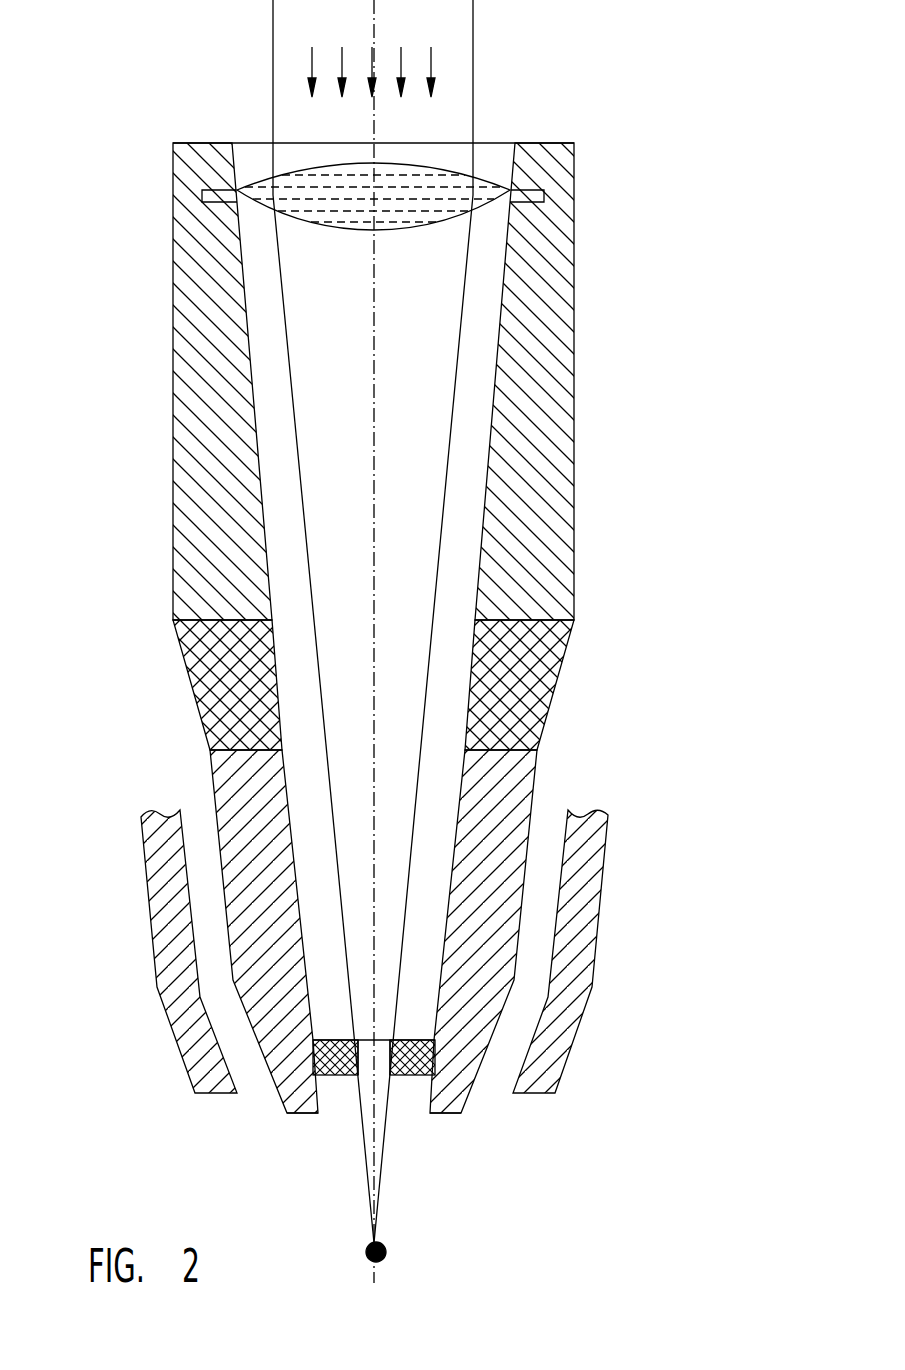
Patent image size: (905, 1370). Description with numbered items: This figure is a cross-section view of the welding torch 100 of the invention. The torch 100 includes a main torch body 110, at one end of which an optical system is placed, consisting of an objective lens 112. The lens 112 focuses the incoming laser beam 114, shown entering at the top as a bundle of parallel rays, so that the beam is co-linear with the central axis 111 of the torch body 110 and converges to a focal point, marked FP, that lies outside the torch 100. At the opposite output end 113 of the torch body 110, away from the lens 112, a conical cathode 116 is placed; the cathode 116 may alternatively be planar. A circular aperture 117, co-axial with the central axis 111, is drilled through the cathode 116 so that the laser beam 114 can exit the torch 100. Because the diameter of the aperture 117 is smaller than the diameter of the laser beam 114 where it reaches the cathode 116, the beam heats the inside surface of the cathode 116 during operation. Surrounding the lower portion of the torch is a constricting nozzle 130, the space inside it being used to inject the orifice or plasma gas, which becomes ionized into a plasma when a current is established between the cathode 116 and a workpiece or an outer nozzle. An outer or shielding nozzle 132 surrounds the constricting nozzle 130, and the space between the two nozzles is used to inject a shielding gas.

The welding torch 100 is at (384, 1280).
The main torch body 110 is at (537, 453).
The central axis 111 is at (374, 356).
The objective lens 112 is at (240, 192).
The output end 113 is at (448, 1118).
The laser beam 114 is at (431, 62).
The conical cathode 116 is at (435, 1056).
The circular aperture 117 is at (366, 1068).
The constricting nozzle 130 is at (512, 798).
The outer or shielding nozzle 132 is at (583, 947).